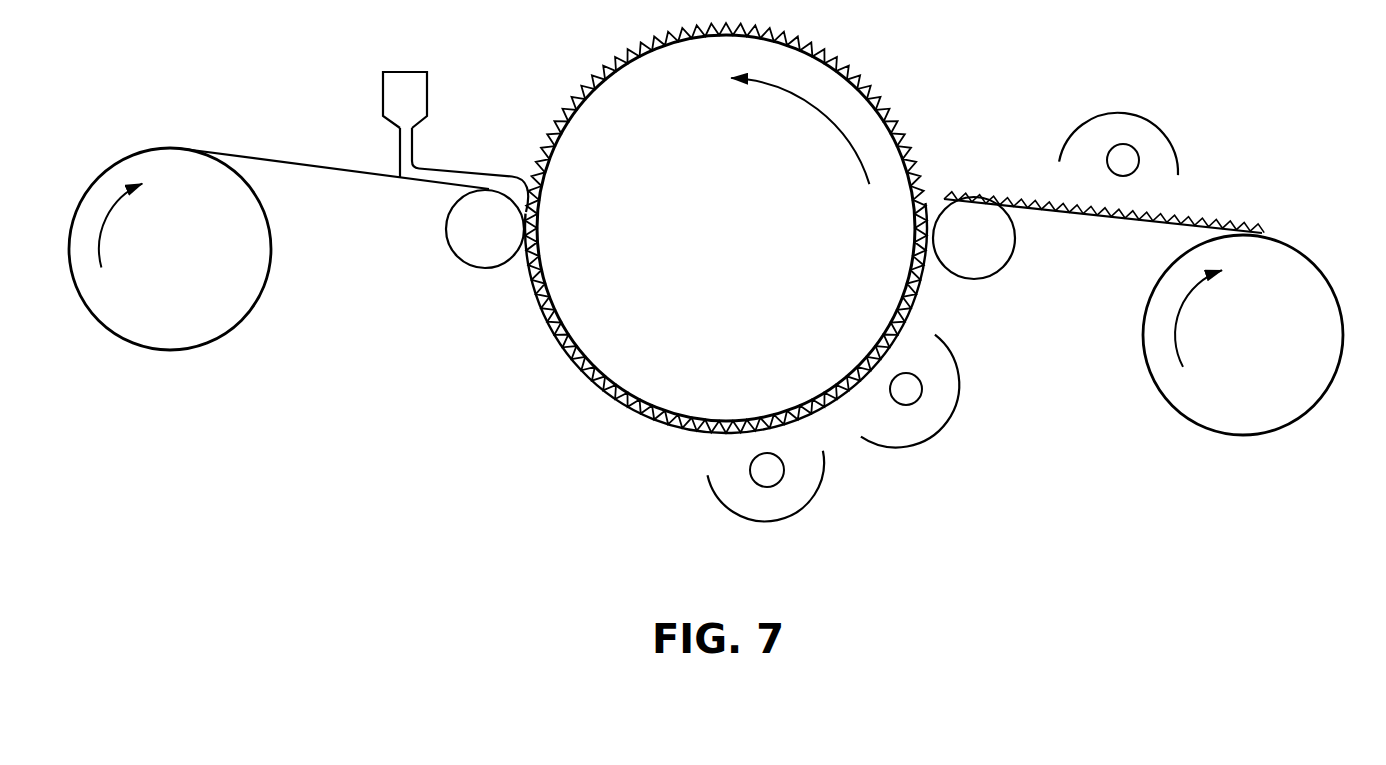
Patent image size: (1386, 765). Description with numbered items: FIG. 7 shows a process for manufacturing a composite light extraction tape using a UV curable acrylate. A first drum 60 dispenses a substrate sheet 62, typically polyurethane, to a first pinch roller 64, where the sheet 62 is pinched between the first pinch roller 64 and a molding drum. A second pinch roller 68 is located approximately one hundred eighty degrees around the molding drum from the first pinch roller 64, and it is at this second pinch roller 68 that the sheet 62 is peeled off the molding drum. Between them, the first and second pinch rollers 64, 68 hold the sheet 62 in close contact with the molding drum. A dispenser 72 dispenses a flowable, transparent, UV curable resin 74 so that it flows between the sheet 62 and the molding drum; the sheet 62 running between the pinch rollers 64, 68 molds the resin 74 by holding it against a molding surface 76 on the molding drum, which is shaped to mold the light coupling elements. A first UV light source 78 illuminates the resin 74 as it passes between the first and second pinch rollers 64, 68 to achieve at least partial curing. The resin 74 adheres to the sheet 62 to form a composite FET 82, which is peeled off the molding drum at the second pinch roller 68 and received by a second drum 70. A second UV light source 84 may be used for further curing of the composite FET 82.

The first drum 60 is at (237, 318).
The substrate sheet 62 is at (280, 161).
The first pinch roller 64 is at (480, 260).
The second pinch roller 68 is at (982, 267).
The second drum 70 is at (1293, 413).
The dispenser 72 is at (412, 102).
The UV curable resin 74 is at (468, 171).
The molding surface 76 is at (827, 50).
The first UV light source 78 is at (808, 493).
The composite FET 82 is at (985, 196).
The second UV light source 84 is at (1153, 128).